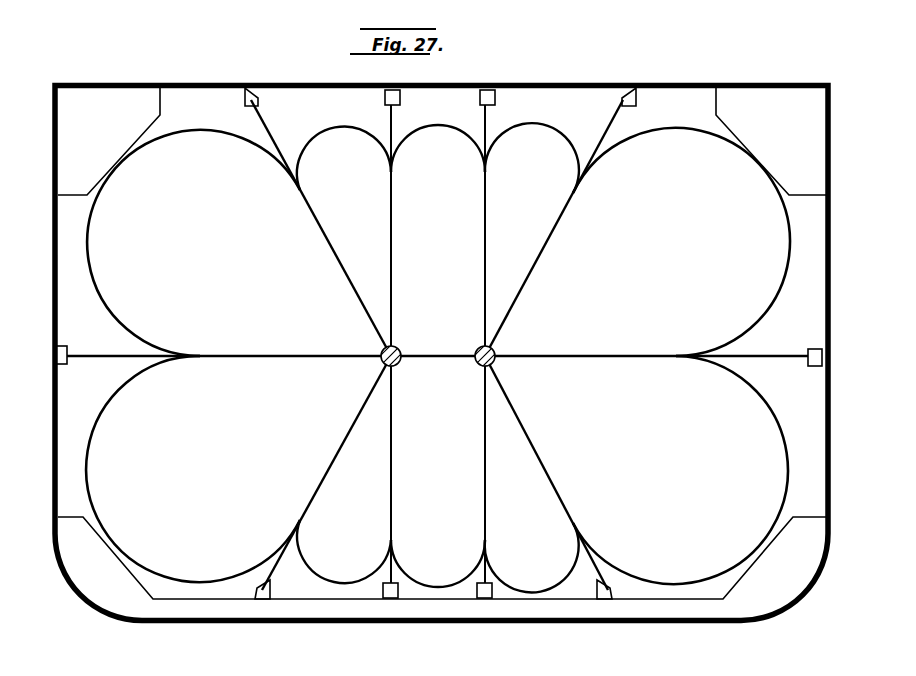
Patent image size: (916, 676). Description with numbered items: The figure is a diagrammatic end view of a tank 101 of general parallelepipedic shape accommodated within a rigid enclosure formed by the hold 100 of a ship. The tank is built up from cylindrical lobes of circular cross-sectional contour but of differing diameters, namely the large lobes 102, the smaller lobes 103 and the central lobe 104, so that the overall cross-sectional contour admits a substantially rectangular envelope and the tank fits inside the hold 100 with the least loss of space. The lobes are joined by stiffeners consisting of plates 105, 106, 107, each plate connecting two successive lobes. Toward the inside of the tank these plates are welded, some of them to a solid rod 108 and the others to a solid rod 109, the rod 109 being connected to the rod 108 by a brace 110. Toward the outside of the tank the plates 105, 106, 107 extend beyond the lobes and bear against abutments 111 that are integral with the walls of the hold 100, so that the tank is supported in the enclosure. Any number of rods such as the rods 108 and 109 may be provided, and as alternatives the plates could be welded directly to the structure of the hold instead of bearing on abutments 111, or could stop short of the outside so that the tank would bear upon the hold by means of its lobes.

The hold 100 is at (831, 268).
The tank 101 is at (795, 224).
The cylindrical lobe 102 is at (680, 134).
The cylindrical lobe 103 is at (327, 125).
The cylindrical lobe 104 is at (440, 127).
The plate 105 is at (247, 354).
The plate 106 is at (317, 221).
The plate 107 is at (391, 206).
The solid rod 108 is at (398, 350).
The solid rod 109 is at (477, 345).
The brace 110 is at (440, 363).
The abutment 111 is at (254, 92).